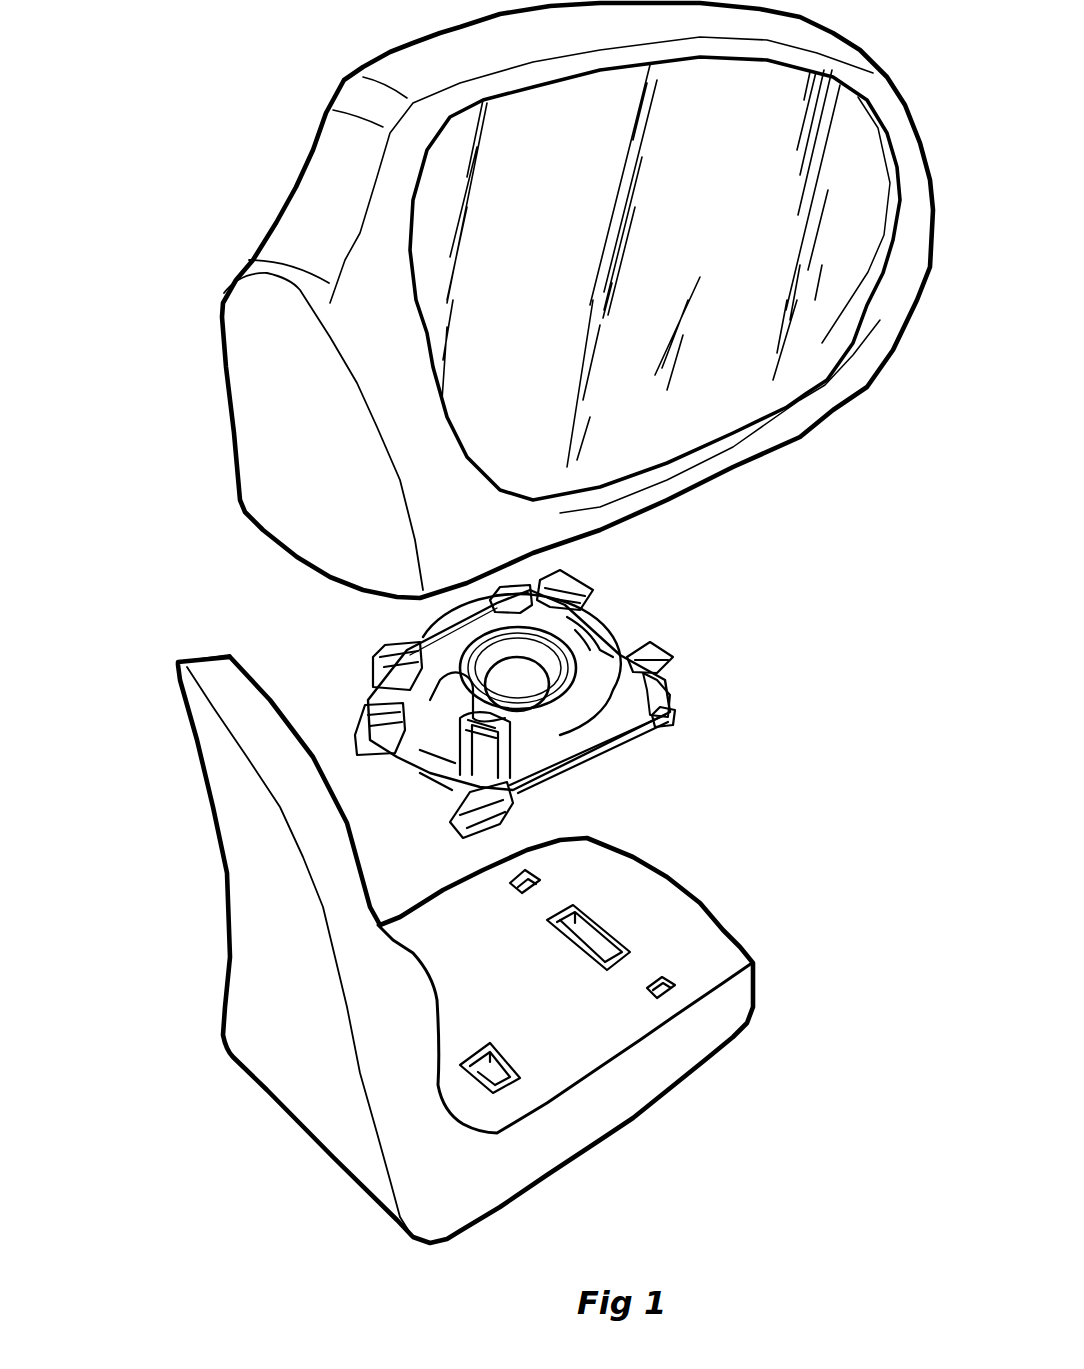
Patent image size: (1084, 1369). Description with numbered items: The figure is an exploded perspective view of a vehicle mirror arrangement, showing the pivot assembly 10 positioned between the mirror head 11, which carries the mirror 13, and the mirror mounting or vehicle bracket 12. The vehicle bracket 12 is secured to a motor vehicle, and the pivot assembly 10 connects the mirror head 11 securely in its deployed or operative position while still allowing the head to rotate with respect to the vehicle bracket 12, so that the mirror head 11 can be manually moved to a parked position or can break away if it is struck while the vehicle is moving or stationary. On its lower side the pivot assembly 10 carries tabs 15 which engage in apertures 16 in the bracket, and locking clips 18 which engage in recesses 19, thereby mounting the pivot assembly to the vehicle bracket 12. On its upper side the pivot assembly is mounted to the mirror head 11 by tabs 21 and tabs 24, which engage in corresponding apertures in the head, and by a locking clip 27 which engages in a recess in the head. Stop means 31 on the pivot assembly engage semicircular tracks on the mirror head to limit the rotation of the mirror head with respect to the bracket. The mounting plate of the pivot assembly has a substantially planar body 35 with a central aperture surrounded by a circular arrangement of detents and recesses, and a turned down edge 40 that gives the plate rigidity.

The pivot assembly 10 is at (696, 611).
The mirror head 11 is at (300, 218).
The vehicle bracket 12 is at (250, 860).
The mirror 13 is at (760, 393).
The tabs 15 is at (452, 800).
The apertures 16 is at (597, 950).
The locking clips 18 is at (665, 708).
The recesses 19 is at (530, 880).
The tabs 21 is at (388, 655).
The tabs 24 is at (575, 575).
The locking clip 27 is at (377, 707).
The stop means 31 is at (457, 680).
The planar body 35 is at (673, 666).
The turned down edge 40 is at (593, 753).